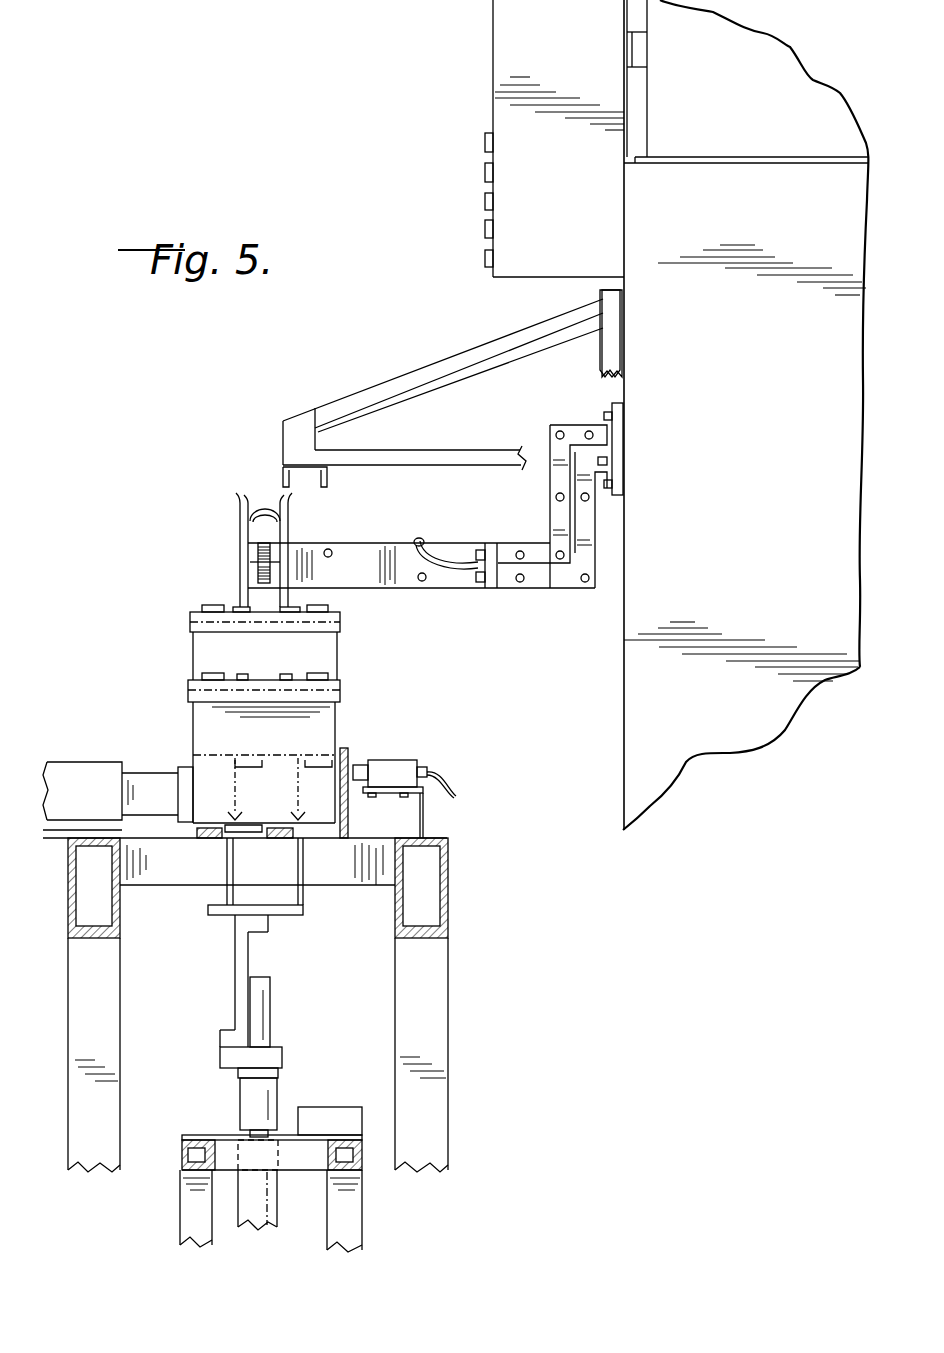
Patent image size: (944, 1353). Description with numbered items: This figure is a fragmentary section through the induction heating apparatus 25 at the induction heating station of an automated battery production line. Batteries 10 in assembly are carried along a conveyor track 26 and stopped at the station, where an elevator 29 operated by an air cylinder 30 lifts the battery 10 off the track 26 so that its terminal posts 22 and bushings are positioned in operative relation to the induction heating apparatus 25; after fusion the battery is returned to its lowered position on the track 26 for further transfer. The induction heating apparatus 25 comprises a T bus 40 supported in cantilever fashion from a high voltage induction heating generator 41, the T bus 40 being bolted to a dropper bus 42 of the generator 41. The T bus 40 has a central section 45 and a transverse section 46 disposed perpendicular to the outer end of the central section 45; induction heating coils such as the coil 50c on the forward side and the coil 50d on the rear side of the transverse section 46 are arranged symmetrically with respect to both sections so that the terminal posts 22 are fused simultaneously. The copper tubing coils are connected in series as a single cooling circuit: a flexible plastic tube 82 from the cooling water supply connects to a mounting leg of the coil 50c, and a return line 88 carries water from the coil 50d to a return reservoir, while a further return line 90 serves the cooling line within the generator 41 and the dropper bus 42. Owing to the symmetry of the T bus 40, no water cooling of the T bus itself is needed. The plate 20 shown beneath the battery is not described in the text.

The battery 10 is at (249, 944).
The mounting plate 20 is at (340, 688).
The terminal post 22 is at (288, 684).
The induction heating apparatus 25 is at (251, 393).
The conveyor track 26 is at (280, 833).
The elevator 29 is at (240, 950).
The air cylinder 30 is at (250, 1210).
The T bus 40 is at (431, 539).
The induction heating generator 41 is at (762, 369).
The dropper bus 42 is at (600, 528).
The central section 45 is at (385, 542).
The transverse section 46 is at (244, 557).
The induction heating coil 50c is at (240, 607).
The induction heating coil 50d is at (292, 607).
The flexible plastic tube 82 is at (240, 506).
The return line 88 is at (292, 500).
The return line 90 is at (424, 546).